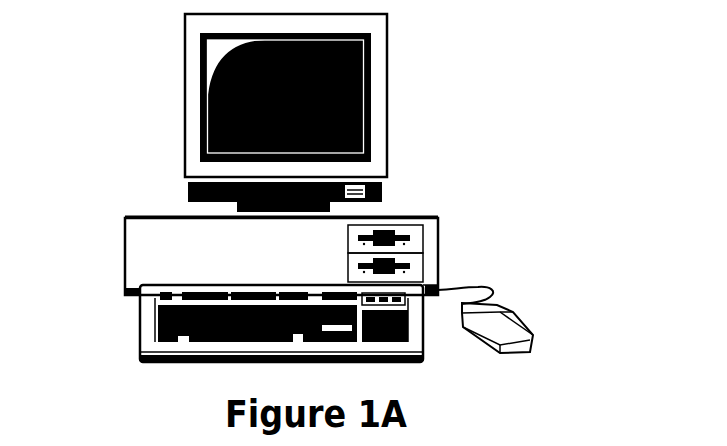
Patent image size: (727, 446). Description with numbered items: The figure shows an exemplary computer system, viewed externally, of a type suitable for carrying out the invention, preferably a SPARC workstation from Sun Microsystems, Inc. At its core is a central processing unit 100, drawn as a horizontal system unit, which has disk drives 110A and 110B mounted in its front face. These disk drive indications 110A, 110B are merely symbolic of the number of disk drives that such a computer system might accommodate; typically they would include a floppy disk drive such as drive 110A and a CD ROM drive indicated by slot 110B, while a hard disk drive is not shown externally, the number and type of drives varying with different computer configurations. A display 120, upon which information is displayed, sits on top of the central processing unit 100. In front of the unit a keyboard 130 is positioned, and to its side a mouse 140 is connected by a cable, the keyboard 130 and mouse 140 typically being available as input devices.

The central processing unit 100 is at (230, 256).
The disk drive 110A is at (331, 238).
The disk drive 110B is at (331, 267).
The display 120 is at (335, 113).
The keyboard 130 is at (231, 323).
The mouse 140 is at (530, 320).